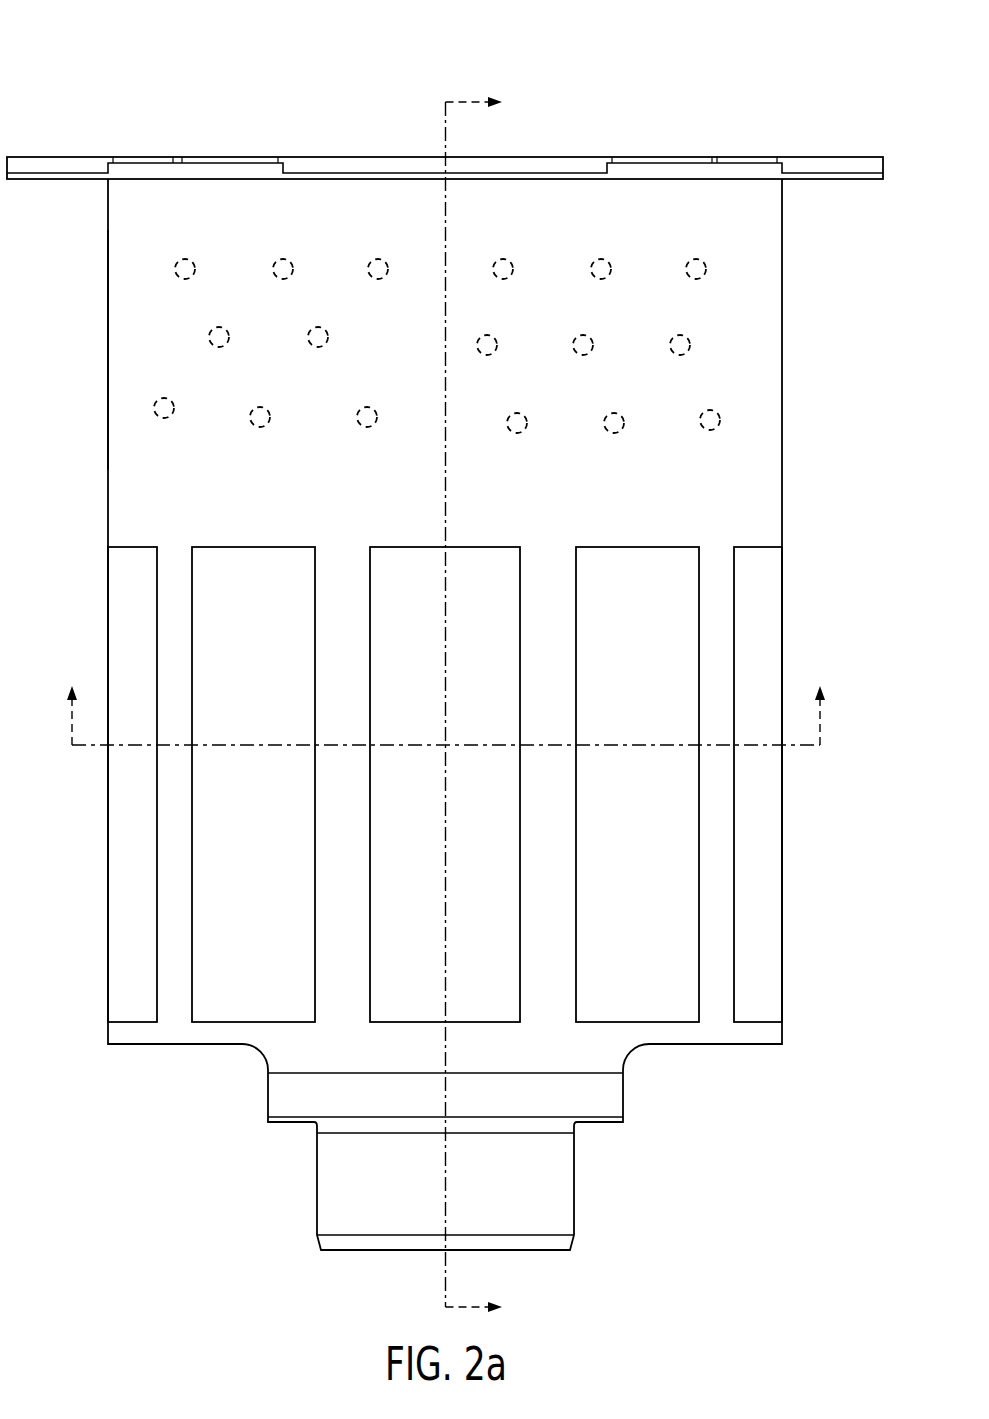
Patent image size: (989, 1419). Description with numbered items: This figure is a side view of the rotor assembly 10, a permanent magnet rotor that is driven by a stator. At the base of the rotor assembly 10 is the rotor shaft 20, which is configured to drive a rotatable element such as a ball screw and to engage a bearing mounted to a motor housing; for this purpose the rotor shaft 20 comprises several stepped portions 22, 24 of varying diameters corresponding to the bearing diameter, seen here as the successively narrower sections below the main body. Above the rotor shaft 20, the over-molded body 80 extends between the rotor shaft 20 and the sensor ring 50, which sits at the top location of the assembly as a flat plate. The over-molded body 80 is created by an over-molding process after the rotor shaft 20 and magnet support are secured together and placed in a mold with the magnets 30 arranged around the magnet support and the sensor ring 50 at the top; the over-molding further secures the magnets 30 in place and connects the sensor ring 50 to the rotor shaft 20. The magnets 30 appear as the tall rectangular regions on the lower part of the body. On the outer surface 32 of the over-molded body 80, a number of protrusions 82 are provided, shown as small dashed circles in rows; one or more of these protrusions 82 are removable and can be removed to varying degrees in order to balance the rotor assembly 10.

The rotor assembly 10 is at (120, 72).
The rotor shaft 20 is at (282, 1095).
The stepped portion 22 is at (608, 1095).
The stepped portion 24 is at (557, 1182).
The magnets 30 is at (122, 893).
The outer surface 32 is at (130, 468).
The sensor ring 50 is at (835, 166).
The over-molded body 80 is at (122, 343).
The protrusions 82 is at (318, 337).